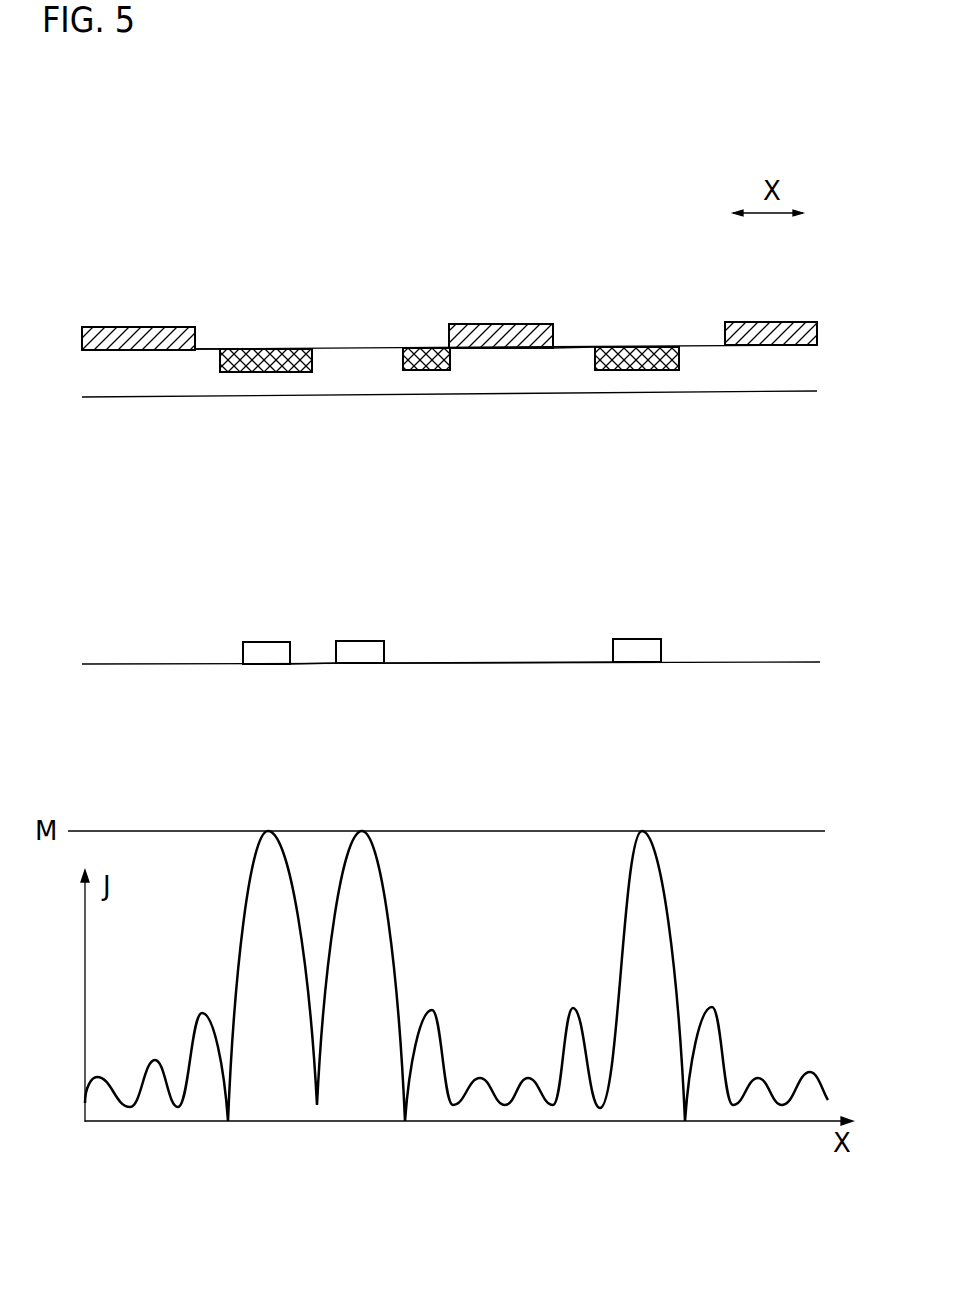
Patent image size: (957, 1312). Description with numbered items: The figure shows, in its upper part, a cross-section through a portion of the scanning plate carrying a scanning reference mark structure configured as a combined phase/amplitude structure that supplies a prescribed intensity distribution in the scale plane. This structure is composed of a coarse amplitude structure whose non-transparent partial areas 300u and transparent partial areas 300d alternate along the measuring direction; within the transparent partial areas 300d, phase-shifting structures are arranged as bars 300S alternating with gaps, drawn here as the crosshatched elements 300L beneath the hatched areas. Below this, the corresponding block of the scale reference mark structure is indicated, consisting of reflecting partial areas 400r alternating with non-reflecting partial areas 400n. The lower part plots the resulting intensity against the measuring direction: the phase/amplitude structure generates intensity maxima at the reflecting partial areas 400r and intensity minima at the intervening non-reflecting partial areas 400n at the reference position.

The non-transparent partial area 300u is at (157, 333).
The transparent partial area 300d is at (213, 338).
The lower mask structure 300L is at (268, 373).
The bar 300S is at (360, 362).
The reflecting partial area 400r is at (272, 652).
The non-reflecting partial area 400n is at (312, 662).